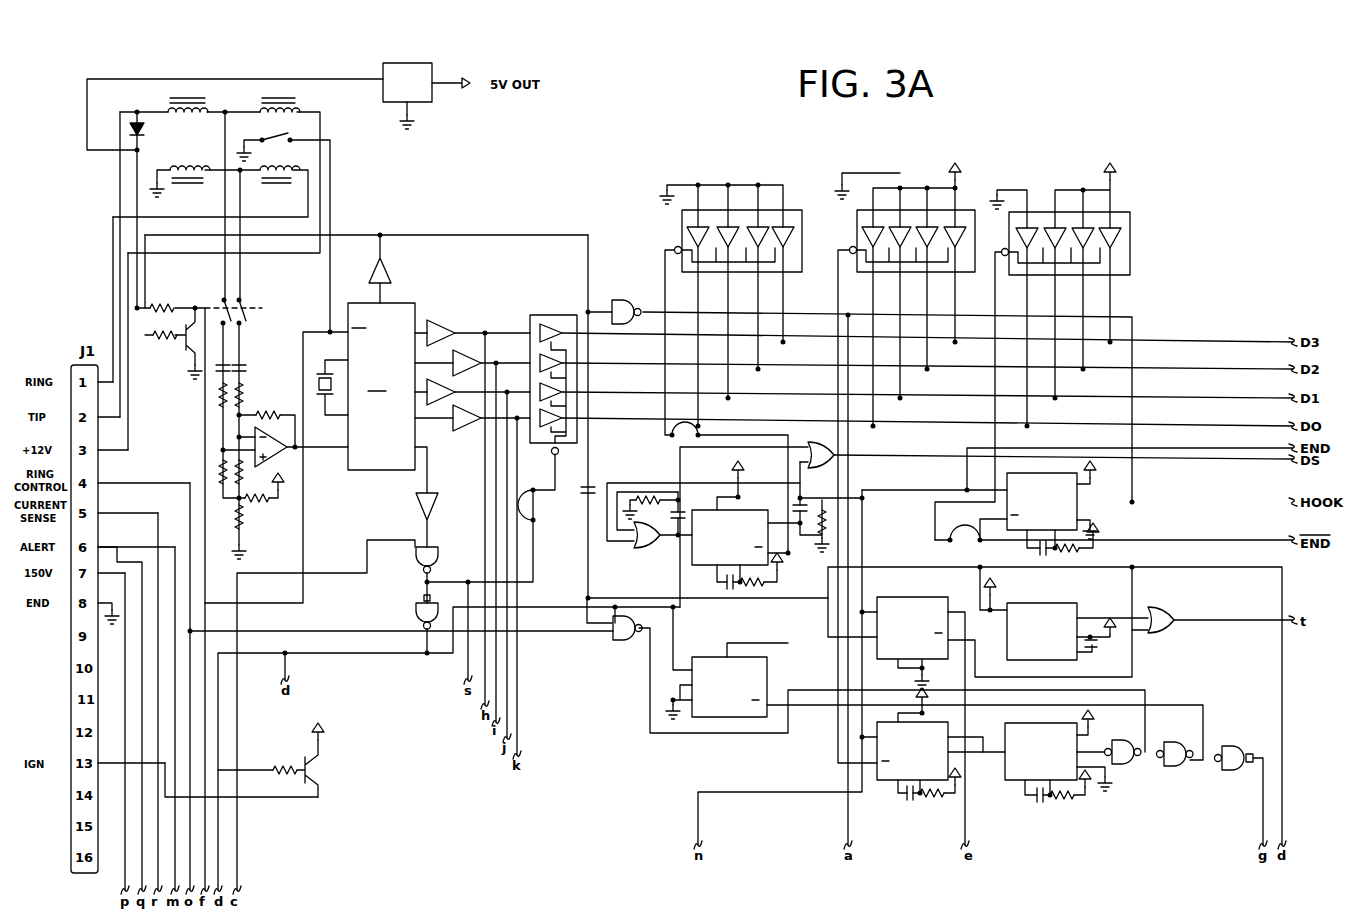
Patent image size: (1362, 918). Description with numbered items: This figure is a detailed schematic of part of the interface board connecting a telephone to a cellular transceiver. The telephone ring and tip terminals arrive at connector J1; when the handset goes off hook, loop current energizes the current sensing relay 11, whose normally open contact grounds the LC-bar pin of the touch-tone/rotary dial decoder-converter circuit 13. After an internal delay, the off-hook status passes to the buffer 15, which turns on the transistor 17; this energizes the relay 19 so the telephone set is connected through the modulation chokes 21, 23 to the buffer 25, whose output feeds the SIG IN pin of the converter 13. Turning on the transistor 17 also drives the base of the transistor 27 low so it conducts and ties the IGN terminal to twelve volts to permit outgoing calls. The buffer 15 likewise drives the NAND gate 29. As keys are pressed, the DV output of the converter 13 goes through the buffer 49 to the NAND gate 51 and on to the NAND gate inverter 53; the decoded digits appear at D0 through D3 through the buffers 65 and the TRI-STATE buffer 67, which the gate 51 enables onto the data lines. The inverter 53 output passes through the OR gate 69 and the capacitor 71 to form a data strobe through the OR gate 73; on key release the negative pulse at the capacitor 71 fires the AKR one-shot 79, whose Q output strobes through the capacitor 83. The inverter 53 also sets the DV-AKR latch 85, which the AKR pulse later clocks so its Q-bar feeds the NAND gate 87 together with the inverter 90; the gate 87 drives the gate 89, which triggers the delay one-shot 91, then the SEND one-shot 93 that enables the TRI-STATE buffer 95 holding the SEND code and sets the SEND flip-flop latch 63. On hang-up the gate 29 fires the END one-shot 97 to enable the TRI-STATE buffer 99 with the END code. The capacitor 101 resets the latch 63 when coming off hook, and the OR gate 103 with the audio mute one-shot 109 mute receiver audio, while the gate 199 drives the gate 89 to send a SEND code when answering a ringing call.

The current sensing relay 11 is at (292, 92).
The touch-tone/rotary dial decoder-converter circuit 13 is at (310, 453).
The buffer 15 is at (394, 270).
The transistor 17 is at (183, 346).
The relay 19 is at (216, 298).
The modulation choke 21 is at (210, 110).
The modulation choke 23 is at (170, 169).
The buffer 25 is at (282, 460).
The transistor 27 is at (320, 772).
The NAND gate 29 is at (618, 300).
The buffer 49 is at (418, 506).
The NAND gate 51 is at (436, 554).
The NAND gate inverter 53 is at (412, 612).
The SEND flip-flop latch 63 is at (904, 600).
The buffers 65 is at (471, 321).
The TRI-STATE buffer 67 is at (550, 315).
The OR gate 69 is at (632, 544).
The capacitor 71 is at (676, 532).
The OR gate 73 is at (834, 448).
The AKR one-shot 79 is at (706, 510).
The capacitor 83 is at (834, 548).
The DV-AKR latch 85 is at (730, 718).
The NAND gate 87 is at (1180, 770).
The gate 89 is at (1126, 766).
The inverter 90 is at (1235, 746).
The delay one-shot 91 is at (682, 230).
The SEND one-shot 93 is at (888, 782).
The TRI-STATE buffer 95 is at (856, 240).
The END one-shot 97 is at (1078, 496).
The TRI-STATE buffer 99 is at (1130, 248).
The capacitor 101 is at (592, 490).
The OR gate 103 is at (1166, 610).
The audio mute one-shot 109 is at (1026, 602).
The gate 199 is at (622, 642).